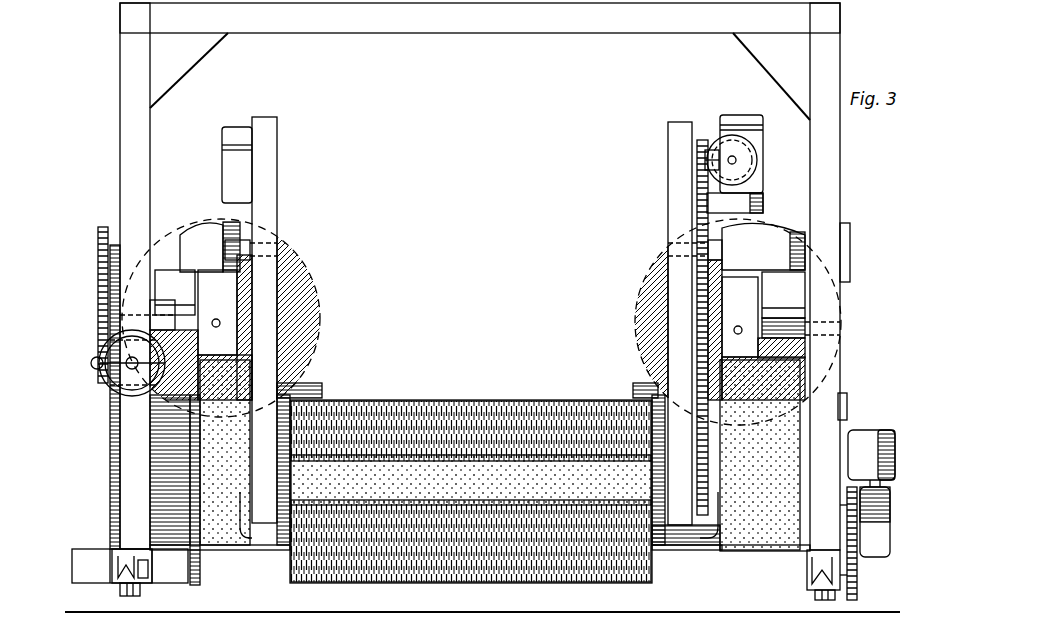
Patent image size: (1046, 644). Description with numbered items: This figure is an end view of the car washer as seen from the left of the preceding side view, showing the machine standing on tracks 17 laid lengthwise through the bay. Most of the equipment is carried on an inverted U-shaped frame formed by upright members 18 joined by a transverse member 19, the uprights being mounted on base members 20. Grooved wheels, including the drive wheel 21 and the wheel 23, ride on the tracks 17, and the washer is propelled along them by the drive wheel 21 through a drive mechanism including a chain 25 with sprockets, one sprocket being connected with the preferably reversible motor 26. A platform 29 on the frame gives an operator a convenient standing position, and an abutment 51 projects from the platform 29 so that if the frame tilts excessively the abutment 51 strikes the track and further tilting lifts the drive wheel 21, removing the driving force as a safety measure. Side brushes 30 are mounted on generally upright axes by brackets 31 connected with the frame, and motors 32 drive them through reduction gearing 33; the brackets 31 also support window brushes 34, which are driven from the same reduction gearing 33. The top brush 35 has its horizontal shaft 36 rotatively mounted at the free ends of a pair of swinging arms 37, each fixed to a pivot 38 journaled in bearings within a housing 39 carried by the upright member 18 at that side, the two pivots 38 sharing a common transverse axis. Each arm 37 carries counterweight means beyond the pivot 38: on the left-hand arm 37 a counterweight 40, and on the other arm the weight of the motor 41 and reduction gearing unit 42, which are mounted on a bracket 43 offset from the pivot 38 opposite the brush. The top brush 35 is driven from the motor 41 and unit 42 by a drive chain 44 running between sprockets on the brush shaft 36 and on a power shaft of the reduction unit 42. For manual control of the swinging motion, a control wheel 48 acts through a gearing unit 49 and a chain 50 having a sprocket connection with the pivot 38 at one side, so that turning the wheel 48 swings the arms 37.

The tracks 17 is at (122, 594).
The upright members 18 is at (121, 118).
The transverse member 19 is at (445, 33).
The base members 20 is at (805, 565).
The drive wheel 21 is at (833, 601).
The grooved wheel 23 is at (145, 597).
The chain 25 is at (858, 562).
The motor 26 is at (875, 430).
The platform 29 is at (108, 549).
The side brushes 30 is at (228, 550).
The brackets 31 is at (152, 318).
The motors 32 is at (175, 272).
The reduction gearing 33 is at (225, 300).
The window brushes 34 is at (318, 322).
The top brush 35 is at (490, 399).
The shaft 36 is at (250, 498).
The swinging arms 37 is at (263, 210).
The pivot 38 is at (250, 250).
The housing 39 is at (195, 218).
The counterweight 40 is at (240, 127).
The motor 41 is at (728, 147).
The reduction gearing unit 42 is at (740, 115).
The bracket 43 is at (760, 194).
The drive chain 44 is at (700, 330).
The control wheel 48 is at (105, 375).
The gearing unit 49 is at (128, 348).
The chain 50 is at (100, 252).
The abutment 51 is at (72, 549).